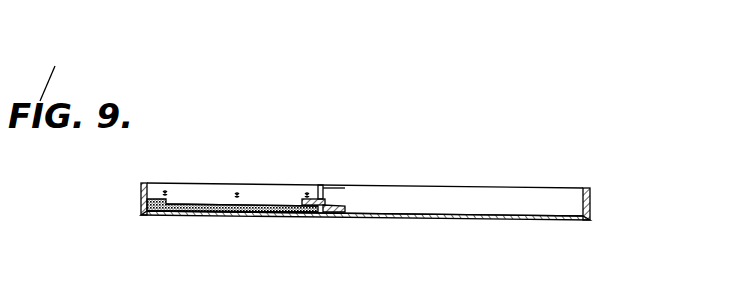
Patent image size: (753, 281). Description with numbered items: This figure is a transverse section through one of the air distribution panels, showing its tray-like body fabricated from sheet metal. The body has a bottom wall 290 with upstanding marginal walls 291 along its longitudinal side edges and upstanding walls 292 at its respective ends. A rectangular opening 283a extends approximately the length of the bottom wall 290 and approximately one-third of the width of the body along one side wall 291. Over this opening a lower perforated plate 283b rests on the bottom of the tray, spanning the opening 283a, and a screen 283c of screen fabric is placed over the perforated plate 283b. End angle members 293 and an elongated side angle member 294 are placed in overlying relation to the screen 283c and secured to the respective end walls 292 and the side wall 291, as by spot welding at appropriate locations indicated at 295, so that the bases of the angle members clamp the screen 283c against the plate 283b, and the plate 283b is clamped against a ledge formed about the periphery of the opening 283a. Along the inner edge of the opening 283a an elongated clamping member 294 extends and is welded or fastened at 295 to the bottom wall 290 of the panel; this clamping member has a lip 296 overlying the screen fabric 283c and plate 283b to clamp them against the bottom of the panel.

The rectangular opening 283a is at (178, 214).
The lower perforated plate 283b is at (242, 215).
The screen 283c is at (199, 205).
The bottom wall 290 is at (470, 218).
The upstanding marginal walls 291 is at (141, 192).
The upstanding end walls 292 is at (509, 196).
The end angle members 293 is at (272, 196).
The elongated side angle member 294 is at (156, 183).
The spot welding locations 295 is at (319, 196).
The lip 296 is at (322, 186).